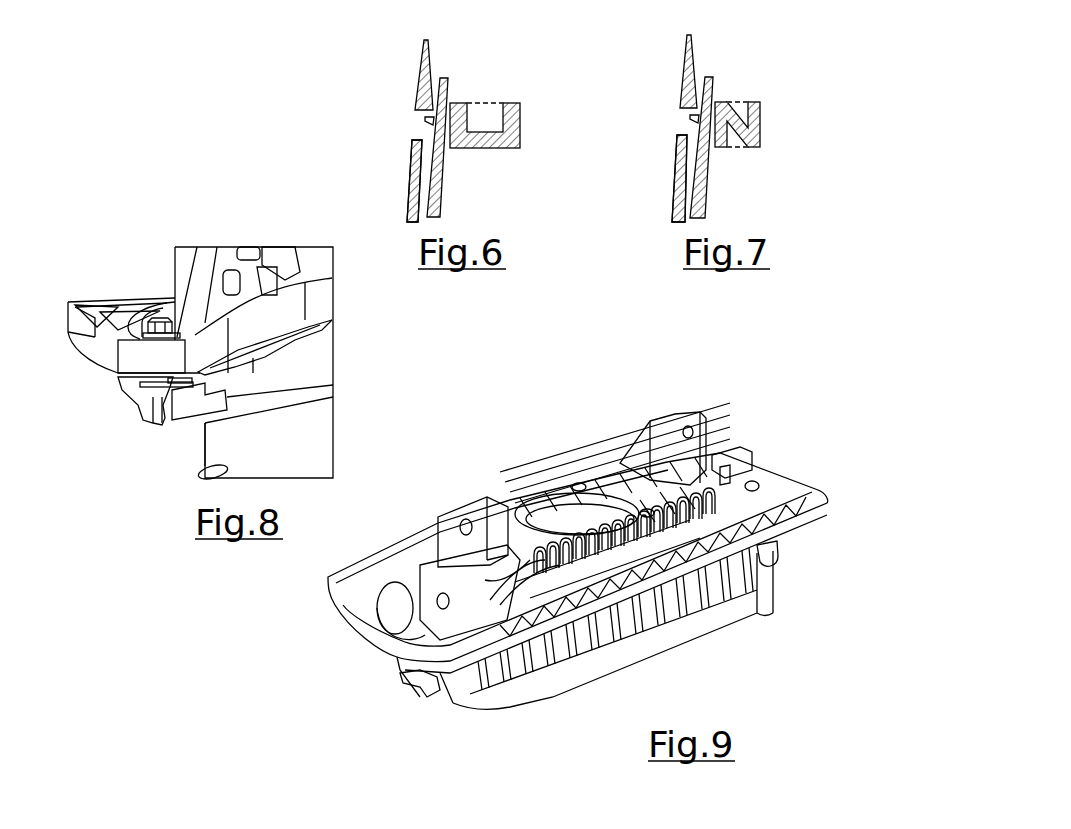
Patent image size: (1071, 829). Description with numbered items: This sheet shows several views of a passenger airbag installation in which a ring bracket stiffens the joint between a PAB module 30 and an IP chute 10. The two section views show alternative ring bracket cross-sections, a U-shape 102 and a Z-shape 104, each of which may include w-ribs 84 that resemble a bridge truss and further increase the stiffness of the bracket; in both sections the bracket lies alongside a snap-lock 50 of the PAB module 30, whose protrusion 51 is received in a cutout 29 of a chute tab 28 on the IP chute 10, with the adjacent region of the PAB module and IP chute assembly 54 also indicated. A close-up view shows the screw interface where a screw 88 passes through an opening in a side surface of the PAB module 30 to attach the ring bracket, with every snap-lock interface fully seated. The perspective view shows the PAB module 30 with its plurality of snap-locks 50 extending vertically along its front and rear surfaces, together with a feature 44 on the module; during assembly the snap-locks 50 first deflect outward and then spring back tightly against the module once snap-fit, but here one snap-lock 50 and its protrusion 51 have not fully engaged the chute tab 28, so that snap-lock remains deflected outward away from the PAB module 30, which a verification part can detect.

In FIG. 8, the IP chute 10 is at (227, 360).
In FIG. 6, the chute tab 28 is at (417, 180).
In FIG. 7, the chute tab 28 is at (680, 180).
In FIG. 6, the cutout 29 is at (415, 116).
In FIG. 7, the cutout 29 is at (680, 113).
In FIG. 8, the PAB module 30 is at (208, 280).
In FIG. 9, the PAB module 30 is at (569, 576).
In FIG. 9, the frame bracket 44 is at (773, 557).
In FIG. 6, the snap-lock 50 is at (446, 76).
In FIG. 7, the snap-lock 50 is at (709, 75).
In FIG. 9, the snap-lock 50 is at (633, 617).
In FIG. 6, the protrusion 51 is at (428, 124).
In FIG. 7, the protrusion 51 is at (692, 121).
In FIG. 9, the protrusion 51 is at (560, 640).
In FIG. 6, the PAB module and IP chute assembly 54 is at (454, 160).
In FIG. 7, the PAB module and IP chute assembly 54 is at (718, 156).
In FIG. 6, the w-ribs 84 is at (490, 103).
In FIG. 7, the w-ribs 84 is at (745, 102).
In FIG. 8, the screw 88 is at (160, 322).
In FIG. 9, the screw 88 is at (383, 621).
In FIG. 6, the U-shape 102 is at (512, 33).
In FIG. 7, the Z-shape 104 is at (775, 33).